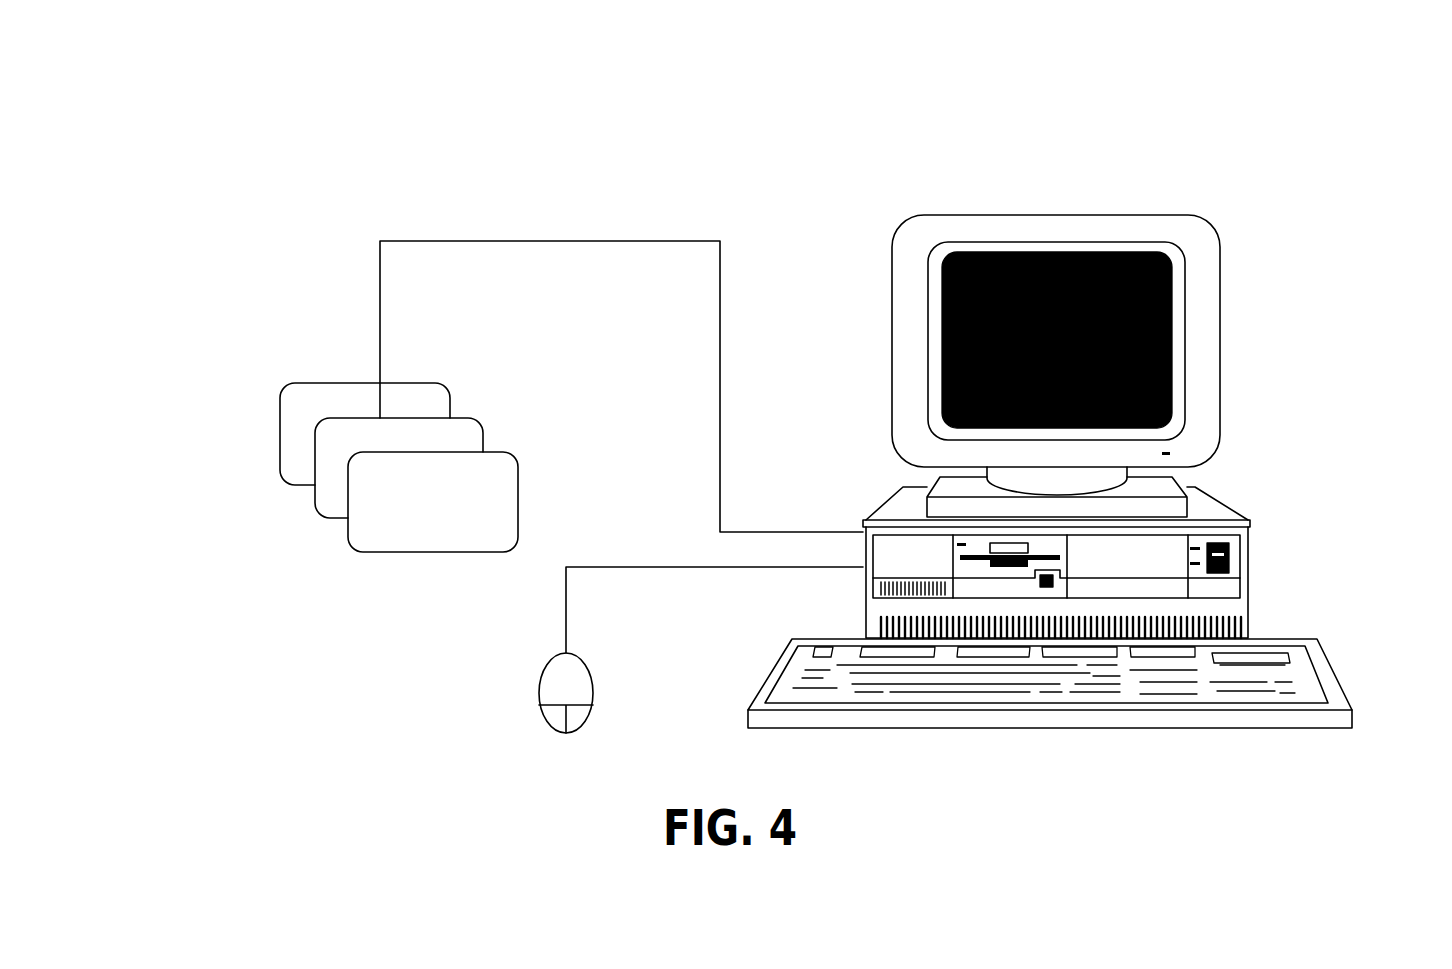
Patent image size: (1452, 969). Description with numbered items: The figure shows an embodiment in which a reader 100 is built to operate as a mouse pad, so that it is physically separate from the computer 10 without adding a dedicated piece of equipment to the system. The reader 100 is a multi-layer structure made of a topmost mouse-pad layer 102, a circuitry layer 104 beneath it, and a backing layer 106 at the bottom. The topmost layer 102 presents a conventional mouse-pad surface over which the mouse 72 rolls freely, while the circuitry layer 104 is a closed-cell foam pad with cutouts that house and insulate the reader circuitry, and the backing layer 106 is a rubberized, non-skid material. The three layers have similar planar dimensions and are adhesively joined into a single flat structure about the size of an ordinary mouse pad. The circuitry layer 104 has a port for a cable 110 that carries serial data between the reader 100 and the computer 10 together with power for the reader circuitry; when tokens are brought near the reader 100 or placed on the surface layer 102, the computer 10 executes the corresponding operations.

The client computer 10 is at (1288, 188).
The position-sensing device 72 is at (583, 655).
The reader 100 is at (345, 469).
The topmost mouse-pad layer 102 is at (492, 452).
The circuitry layer 104 is at (458, 418).
The backing layer 106 is at (420, 383).
The cable 110 is at (448, 241).